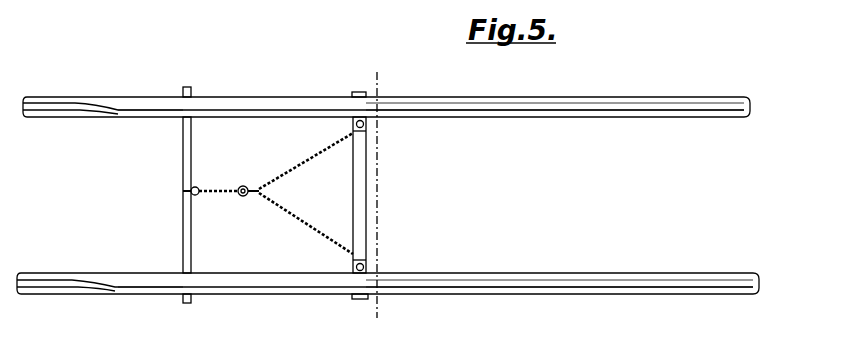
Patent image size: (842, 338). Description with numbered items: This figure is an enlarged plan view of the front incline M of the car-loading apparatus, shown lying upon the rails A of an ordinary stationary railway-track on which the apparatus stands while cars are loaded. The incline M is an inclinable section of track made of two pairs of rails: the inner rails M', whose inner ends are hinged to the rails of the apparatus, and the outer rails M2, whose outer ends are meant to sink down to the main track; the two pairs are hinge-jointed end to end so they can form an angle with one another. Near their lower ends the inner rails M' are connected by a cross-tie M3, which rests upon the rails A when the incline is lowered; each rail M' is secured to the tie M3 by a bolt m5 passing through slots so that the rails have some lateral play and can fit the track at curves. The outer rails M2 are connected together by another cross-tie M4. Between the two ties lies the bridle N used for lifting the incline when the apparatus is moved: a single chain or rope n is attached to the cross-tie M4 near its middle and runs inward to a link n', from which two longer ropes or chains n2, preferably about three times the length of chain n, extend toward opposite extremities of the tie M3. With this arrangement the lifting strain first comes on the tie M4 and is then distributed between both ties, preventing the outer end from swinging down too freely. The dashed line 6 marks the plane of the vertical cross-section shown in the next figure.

The rail of stationary railway-track A is at (58, 100).
The front incline M is at (559, 191).
The inner pair of rails M' is at (559, 178).
The outer pair of rails M2 is at (250, 94).
The cross-tie M3 is at (352, 190).
The cross-tie M4 is at (181, 176).
The bolt m5 is at (364, 126).
The bridle N is at (268, 193).
The chain or rope n is at (210, 187).
The link n' is at (248, 179).
The ropes or chains n2 is at (306, 193).
The section line 6 is at (387, 198).